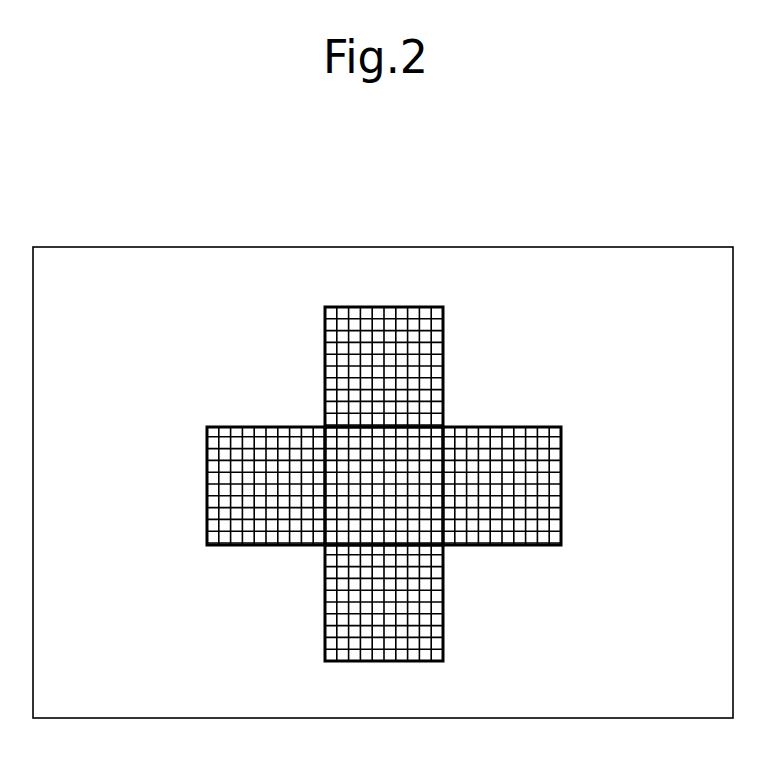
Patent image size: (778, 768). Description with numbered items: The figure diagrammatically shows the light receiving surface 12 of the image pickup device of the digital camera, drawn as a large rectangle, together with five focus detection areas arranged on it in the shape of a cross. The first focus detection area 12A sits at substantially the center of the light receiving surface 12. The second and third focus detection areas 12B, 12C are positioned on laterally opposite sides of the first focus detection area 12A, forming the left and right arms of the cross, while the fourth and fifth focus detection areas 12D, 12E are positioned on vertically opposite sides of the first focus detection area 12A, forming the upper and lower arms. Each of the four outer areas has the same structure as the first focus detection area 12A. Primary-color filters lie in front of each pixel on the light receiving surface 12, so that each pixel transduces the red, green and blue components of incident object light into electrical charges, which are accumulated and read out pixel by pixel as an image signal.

The light receiving surface 12 is at (438, 247).
The first focus detection area 12A is at (386, 478).
The second focus detection area 12B is at (263, 470).
The third focus detection area 12C is at (500, 487).
The fourth focus detection area 12D is at (385, 368).
The fifth focus detection area 12E is at (383, 597).